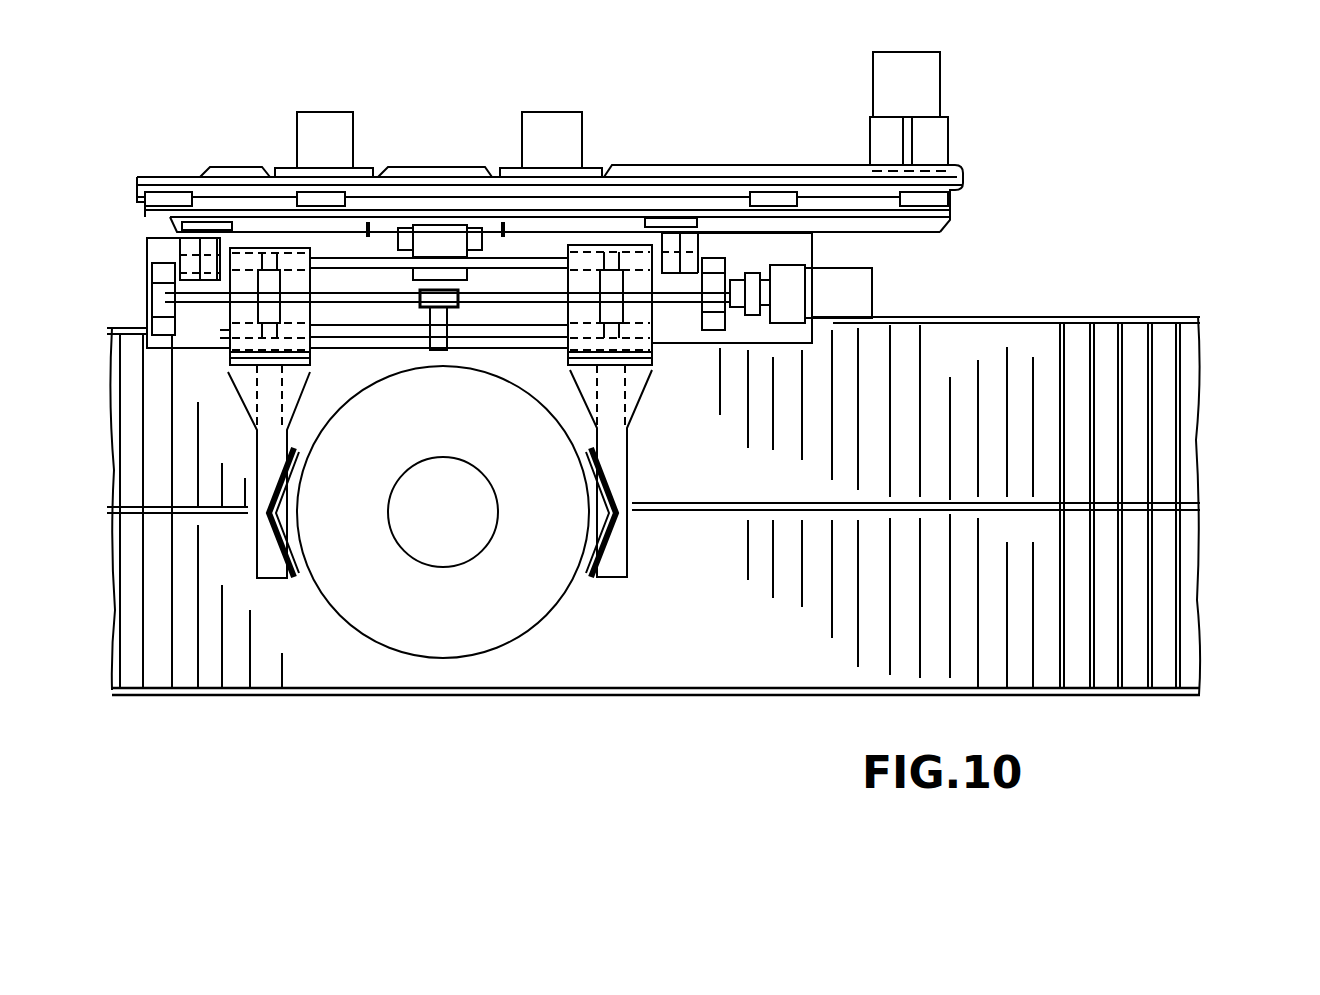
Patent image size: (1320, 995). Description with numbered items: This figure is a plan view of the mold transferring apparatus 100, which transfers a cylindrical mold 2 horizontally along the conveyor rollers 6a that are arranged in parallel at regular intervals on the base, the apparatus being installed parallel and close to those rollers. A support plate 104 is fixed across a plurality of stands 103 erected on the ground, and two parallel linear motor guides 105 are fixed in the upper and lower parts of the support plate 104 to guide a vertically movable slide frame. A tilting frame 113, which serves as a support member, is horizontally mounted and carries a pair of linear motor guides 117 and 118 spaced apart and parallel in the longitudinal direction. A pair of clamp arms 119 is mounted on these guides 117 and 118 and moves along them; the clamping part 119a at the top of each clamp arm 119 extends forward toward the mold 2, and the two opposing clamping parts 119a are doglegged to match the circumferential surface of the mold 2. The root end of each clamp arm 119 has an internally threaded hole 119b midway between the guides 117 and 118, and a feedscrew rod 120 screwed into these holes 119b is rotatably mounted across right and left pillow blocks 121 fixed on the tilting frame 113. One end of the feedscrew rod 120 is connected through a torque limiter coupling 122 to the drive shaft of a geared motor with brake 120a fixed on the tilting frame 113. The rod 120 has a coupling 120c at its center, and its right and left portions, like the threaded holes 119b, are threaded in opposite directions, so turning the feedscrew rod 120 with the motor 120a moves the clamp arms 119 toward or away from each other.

The mold 2 is at (443, 658).
The conveyor rollers 6a is at (1137, 440).
The transferring apparatus 100 is at (775, 145).
The stands 103 is at (357, 137).
The support plate 104 is at (700, 172).
The linear motor guides 105 is at (965, 190).
The tilting frame 113 is at (160, 253).
The linear motor guide 117 is at (533, 262).
The linear motor guide 118 is at (413, 328).
The clamp arms 119 is at (268, 455).
The clamping part 119a is at (296, 572).
The threaded hole 119b is at (255, 300).
The feedscrew rod 120 is at (367, 300).
The geared motor with brake 120a is at (872, 290).
The coupling 120c is at (468, 307).
The pillow blocks 121 is at (157, 300).
The torque limiter coupling 122 is at (752, 270).